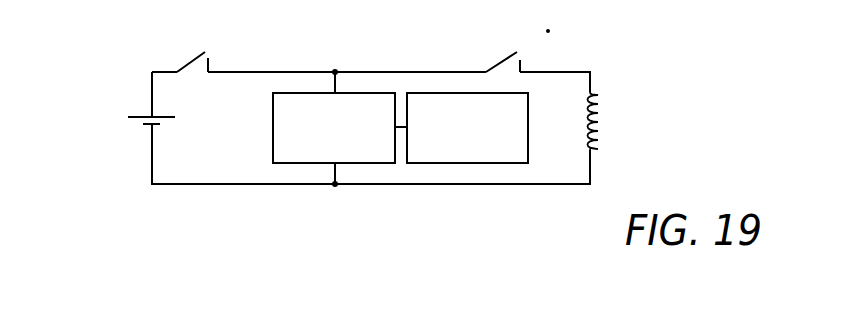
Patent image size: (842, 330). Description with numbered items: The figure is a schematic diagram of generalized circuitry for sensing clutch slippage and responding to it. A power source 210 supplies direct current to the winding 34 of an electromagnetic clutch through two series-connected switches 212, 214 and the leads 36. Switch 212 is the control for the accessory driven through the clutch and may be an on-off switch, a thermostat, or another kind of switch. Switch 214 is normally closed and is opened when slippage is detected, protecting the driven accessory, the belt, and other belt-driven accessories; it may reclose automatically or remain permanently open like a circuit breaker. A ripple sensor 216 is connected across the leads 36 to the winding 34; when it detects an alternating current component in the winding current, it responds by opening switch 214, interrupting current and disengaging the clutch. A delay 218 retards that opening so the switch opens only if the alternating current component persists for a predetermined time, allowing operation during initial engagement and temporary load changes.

The power source 210 is at (139, 113).
The switch 212 is at (190, 55).
The switch 214 is at (504, 57).
The ripple sensor 216 is at (273, 118).
The delay 218 is at (528, 112).
The leads 36 is at (551, 72).
The winding 34 is at (600, 118).